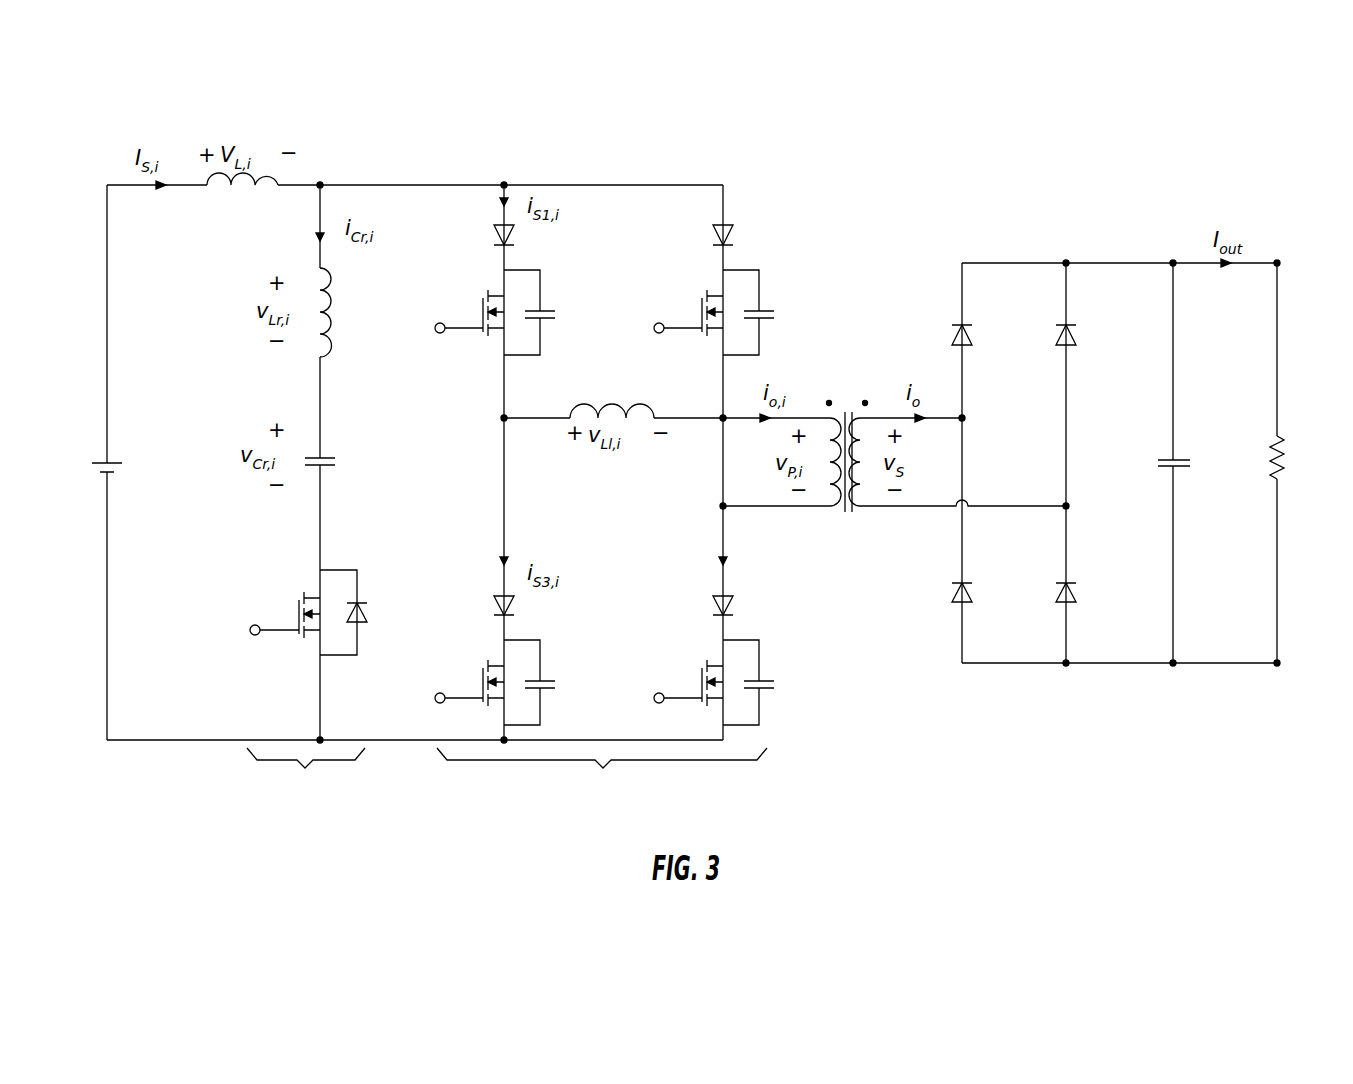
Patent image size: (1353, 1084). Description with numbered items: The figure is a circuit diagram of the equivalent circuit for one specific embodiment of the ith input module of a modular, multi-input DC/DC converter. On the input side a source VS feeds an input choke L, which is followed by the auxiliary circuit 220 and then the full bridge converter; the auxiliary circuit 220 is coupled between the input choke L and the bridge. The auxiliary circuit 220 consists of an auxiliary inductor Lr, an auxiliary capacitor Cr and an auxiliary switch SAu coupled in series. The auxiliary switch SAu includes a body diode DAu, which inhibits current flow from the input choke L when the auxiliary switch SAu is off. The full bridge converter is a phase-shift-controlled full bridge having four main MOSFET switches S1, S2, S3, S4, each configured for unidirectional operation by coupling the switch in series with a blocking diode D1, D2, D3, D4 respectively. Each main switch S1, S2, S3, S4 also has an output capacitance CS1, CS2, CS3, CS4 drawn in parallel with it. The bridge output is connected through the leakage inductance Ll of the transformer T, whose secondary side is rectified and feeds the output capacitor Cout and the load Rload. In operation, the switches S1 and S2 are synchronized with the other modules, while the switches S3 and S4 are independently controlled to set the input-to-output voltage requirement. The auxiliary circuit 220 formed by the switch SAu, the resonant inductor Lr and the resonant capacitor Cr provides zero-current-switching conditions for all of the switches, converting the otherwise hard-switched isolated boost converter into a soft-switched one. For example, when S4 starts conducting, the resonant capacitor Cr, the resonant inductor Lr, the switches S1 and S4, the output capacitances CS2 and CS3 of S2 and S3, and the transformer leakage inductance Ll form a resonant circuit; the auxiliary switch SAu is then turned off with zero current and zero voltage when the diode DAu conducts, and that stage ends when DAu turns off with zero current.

The auxiliary circuit 220 is at (533, 496).
The input choke L is at (242, 201).
The input voltage source VS is at (134, 461).
The auxiliary inductor Lr is at (347, 312).
The auxiliary capacitor Cr is at (341, 465).
The auxiliary switch SAu is at (279, 632).
The body diode DAu is at (372, 612).
The main MOSFET switch S1 is at (469, 331).
The main MOSFET switch S2 is at (688, 331).
The main MOSFET switch S3 is at (469, 701).
The main MOSFET switch S4 is at (688, 701).
The blocking diode D1 is at (524, 242).
The blocking diode D2 is at (746, 242).
The blocking diode D3 is at (524, 613).
The blocking diode D4 is at (746, 613).
The output capacitance CS1 is at (556, 312).
The output capacitance CS2 is at (775, 312).
The output capacitance CS3 is at (556, 682).
The output capacitance CS4 is at (775, 682).
The leakage inductance of the transformer Ll is at (613, 397).
The transformer T is at (896, 474).
The output capacitor Cout is at (1202, 472).
The output load Rload is at (1304, 462).